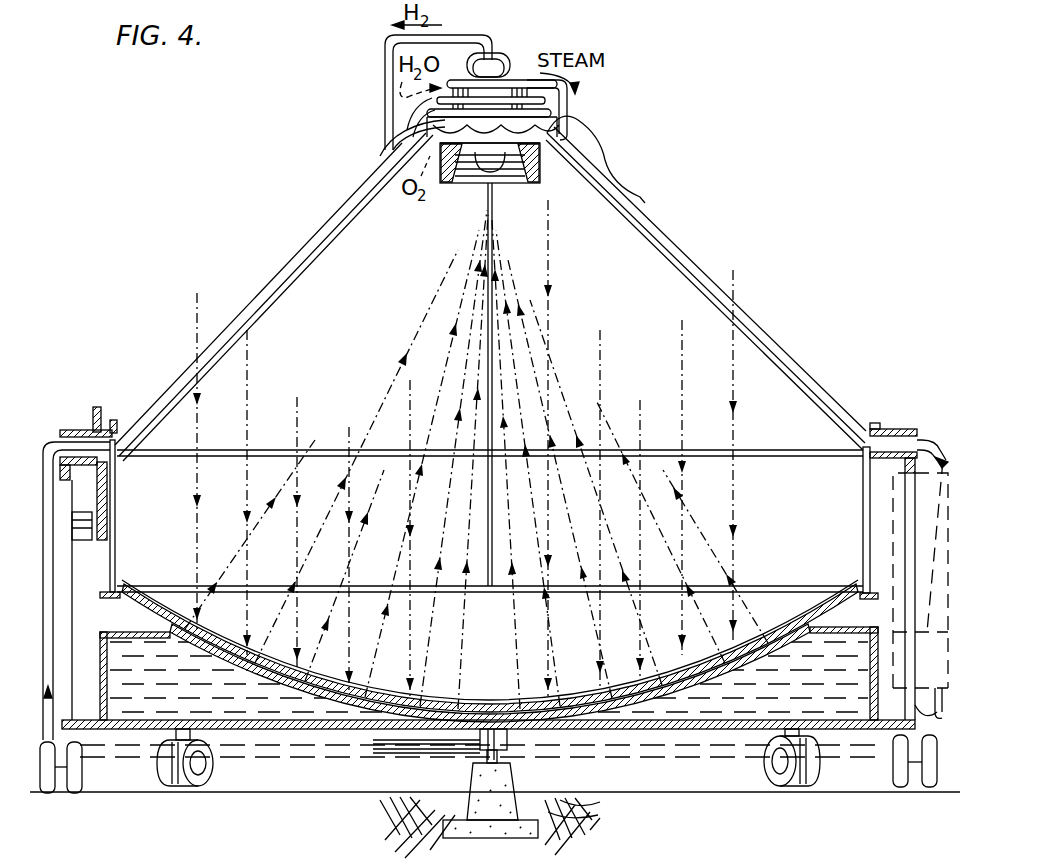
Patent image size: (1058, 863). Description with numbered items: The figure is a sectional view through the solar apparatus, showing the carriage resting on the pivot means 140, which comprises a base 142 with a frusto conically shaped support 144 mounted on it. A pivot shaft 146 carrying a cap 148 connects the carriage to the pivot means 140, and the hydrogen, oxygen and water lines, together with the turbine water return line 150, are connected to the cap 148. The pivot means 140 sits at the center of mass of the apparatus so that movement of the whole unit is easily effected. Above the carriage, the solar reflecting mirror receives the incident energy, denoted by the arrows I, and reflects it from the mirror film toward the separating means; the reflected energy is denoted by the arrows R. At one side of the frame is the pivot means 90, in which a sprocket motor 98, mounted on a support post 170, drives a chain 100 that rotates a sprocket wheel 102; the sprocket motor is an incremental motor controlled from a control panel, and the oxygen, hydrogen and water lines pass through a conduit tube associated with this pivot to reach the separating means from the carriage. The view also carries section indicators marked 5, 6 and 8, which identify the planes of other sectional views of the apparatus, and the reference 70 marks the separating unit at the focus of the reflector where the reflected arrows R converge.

The section line 5- 5 is at (490, 60).
The section line 6- 6 is at (36, 467).
The section line 8- 8 is at (462, 630).
The receiver boiler unit 70 is at (473, 168).
The pivot means 90 is at (118, 402).
The sprocket motor 98 is at (84, 540).
The chain 100 is at (106, 503).
The sprocket wheel 102 is at (94, 425).
The pivot means 140 is at (523, 778).
The base 142 is at (538, 834).
The frusto conically shaped support 144 is at (470, 812).
The pivot shaft 146 is at (485, 758).
The cap 148 is at (508, 742).
The turbine water return line 150 is at (905, 722).
The support post 170 is at (67, 606).
The reflected energy arrows R is at (632, 407).
The incident energy arrows I is at (673, 372).